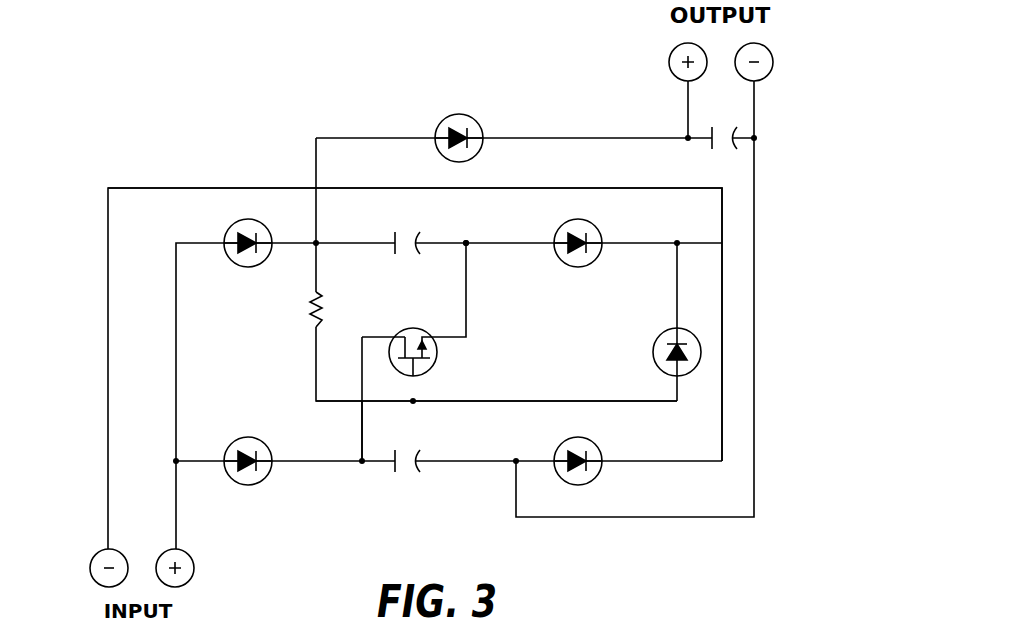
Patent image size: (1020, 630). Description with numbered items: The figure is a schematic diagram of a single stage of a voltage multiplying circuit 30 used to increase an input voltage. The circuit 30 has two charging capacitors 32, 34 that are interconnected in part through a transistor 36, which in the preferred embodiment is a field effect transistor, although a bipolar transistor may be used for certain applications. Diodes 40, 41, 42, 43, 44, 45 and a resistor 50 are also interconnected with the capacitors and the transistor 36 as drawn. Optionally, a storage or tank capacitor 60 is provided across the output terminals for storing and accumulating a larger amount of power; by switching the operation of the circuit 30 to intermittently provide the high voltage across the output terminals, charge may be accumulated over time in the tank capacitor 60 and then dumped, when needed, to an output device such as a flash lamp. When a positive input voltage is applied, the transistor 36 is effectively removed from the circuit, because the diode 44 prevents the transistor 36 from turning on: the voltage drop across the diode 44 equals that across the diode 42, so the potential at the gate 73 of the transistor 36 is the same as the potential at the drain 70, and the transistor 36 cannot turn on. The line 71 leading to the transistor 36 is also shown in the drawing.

The voltage multiplying circuit 30 is at (795, 302).
The charging capacitor 32 is at (395, 247).
The charging capacitor 34 is at (396, 472).
The transistor 36 is at (433, 366).
The diode 40 is at (250, 266).
The diode 41 is at (250, 486).
The diode 42 is at (565, 262).
The diode 43 is at (594, 481).
The diode 44 is at (657, 364).
The diode 45 is at (471, 118).
The resistor 50 is at (316, 325).
The tank capacitor 60 is at (730, 132).
The drain 70 is at (466, 241).
The gate line 71 is at (362, 464).
The gate 73 is at (416, 405).